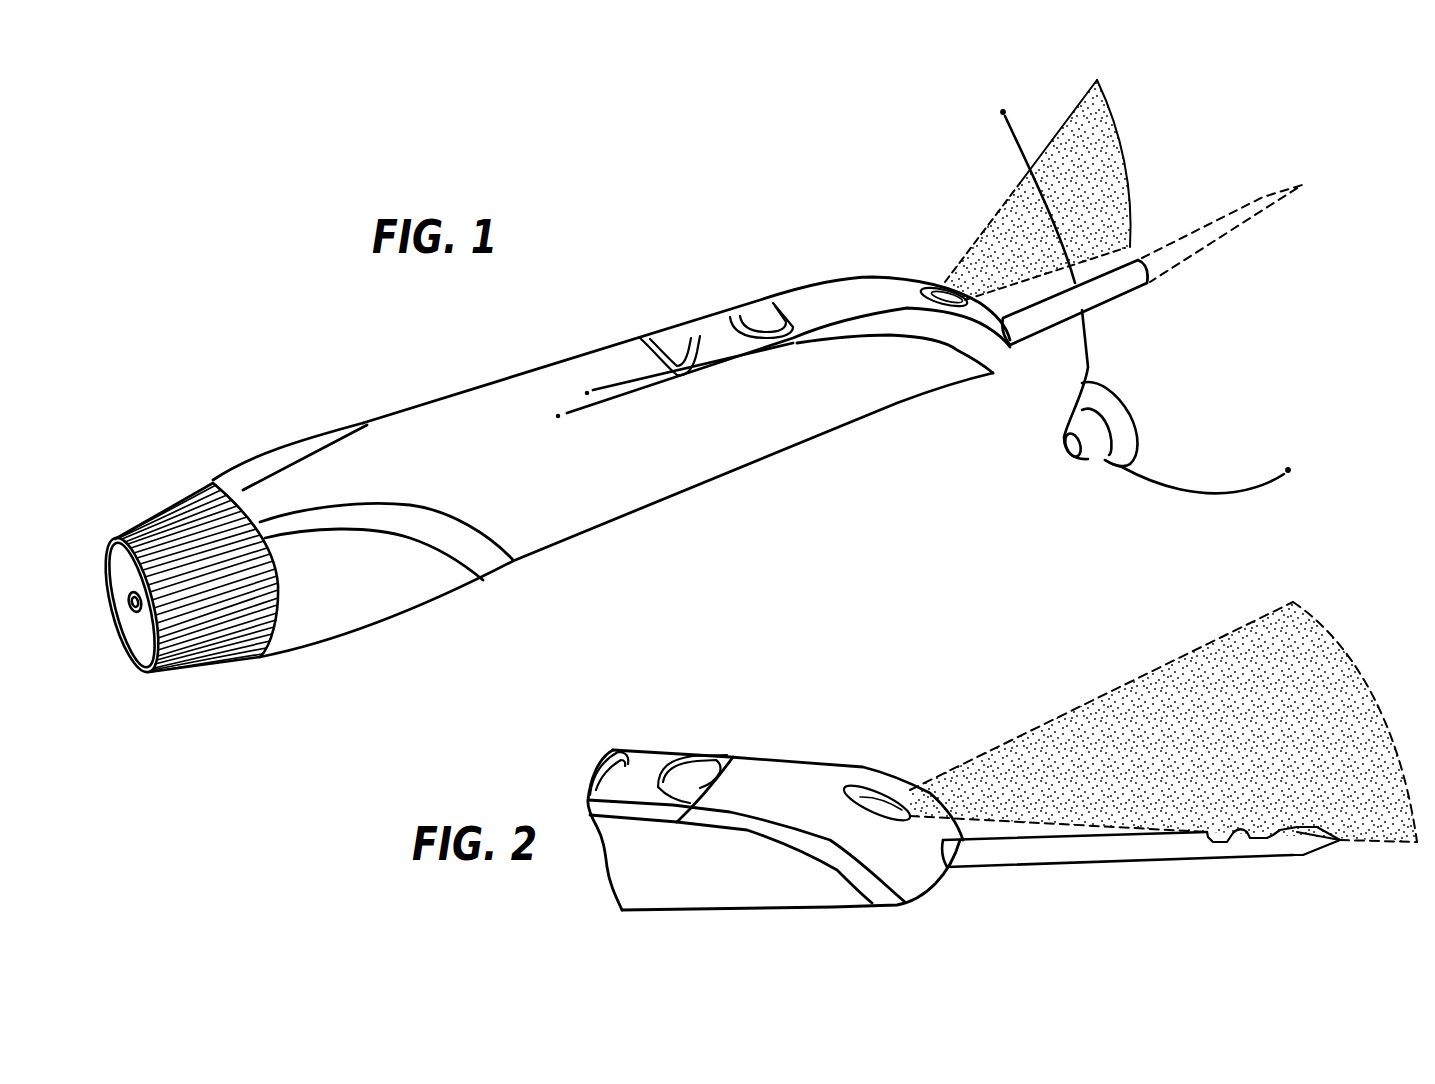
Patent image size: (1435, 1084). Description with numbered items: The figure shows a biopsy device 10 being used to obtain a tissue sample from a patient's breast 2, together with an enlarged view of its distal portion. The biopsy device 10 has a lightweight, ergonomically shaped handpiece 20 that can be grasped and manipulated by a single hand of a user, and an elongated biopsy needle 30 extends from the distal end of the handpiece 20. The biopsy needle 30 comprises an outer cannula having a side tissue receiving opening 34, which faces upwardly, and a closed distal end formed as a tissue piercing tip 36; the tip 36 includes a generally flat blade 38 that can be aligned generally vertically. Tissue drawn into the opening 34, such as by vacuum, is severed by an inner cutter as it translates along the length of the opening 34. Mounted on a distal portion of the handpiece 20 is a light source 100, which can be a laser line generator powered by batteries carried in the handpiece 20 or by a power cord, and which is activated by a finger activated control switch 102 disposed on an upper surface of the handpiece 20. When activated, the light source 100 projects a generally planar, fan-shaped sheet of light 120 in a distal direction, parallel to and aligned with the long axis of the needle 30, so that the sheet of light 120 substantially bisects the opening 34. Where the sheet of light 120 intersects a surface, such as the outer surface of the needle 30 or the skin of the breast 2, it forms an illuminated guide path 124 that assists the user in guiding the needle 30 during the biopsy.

In FIG. 1, the biopsy device 10 is at (800, 209).
In FIG. 1, the handpiece 20 is at (403, 391).
In FIG. 1, the biopsy needle 30 is at (1038, 332).
In FIG. 1, the tissue receiving opening 34 is at (1228, 214).
In FIG. 2, the tissue receiving opening 34 is at (1252, 843).
In FIG. 2, the tissue piercing tip 36 is at (1337, 852).
In FIG. 2, the blade 38 is at (1340, 840).
In FIG. 1, the light source 100 is at (942, 269).
In FIG. 2, the light source 100 is at (881, 792).
In FIG. 1, the control switch 102 is at (696, 312).
In FIG. 2, the control switch 102 is at (644, 766).
In FIG. 1, the sheet of light 120 is at (1020, 190).
In FIG. 2, the sheet of light 120 is at (1150, 702).
In FIG. 1, the guide path 124 is at (1113, 107).
In FIG. 2, the guide path 124 is at (1153, 843).
In FIG. 1, the patient's breast 2 is at (1215, 425).